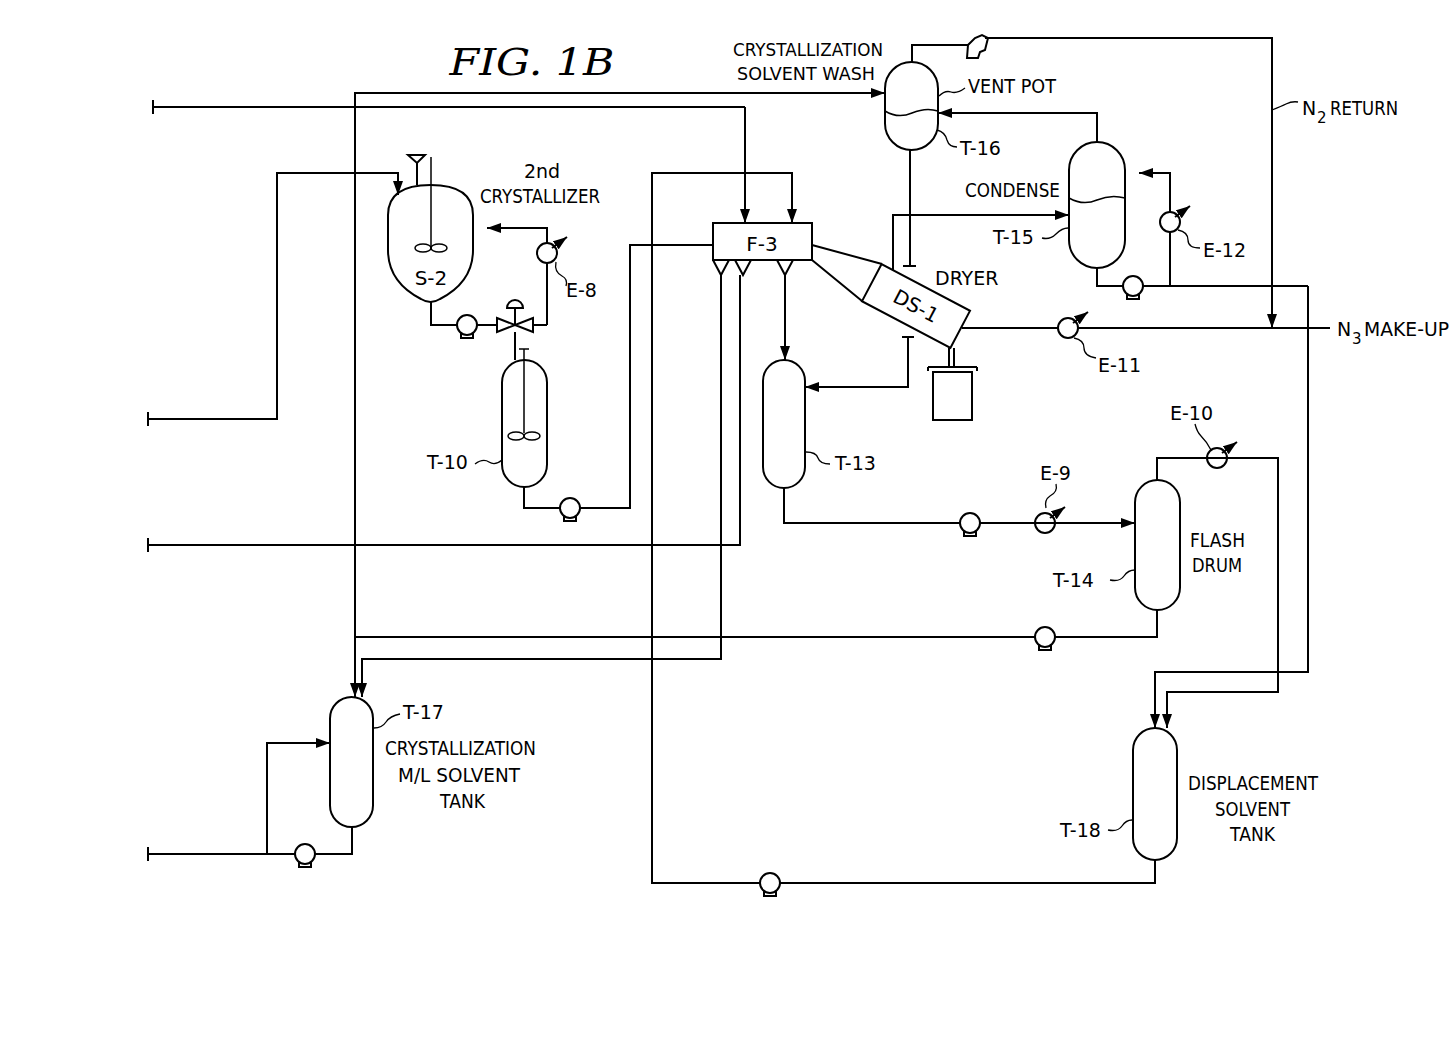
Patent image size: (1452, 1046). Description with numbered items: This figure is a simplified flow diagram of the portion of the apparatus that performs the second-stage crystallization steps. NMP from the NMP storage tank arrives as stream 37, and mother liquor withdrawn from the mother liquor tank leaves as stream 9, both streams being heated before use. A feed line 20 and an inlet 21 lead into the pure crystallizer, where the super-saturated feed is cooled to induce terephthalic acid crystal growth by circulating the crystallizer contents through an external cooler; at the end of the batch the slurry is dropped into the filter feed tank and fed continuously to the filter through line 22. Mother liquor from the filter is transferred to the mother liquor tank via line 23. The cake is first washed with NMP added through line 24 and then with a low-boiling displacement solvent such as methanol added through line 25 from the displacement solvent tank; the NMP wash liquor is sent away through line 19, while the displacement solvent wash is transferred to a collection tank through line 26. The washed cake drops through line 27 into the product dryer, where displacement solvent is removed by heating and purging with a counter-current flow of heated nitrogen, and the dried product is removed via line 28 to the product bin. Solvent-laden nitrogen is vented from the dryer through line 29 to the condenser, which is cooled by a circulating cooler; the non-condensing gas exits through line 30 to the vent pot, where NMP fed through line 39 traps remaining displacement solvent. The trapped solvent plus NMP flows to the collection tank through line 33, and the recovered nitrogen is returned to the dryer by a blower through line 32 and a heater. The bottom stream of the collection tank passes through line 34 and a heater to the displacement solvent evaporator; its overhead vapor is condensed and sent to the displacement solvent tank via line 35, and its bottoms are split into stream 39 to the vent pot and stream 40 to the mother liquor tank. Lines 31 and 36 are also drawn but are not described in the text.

The mother liquor stream 9 is at (234, 855).
The NMP wash liquor line 19 is at (290, 546).
The feed line to second crystallizer 20 is at (252, 419).
The second crystallizer inlet funnel 21 is at (411, 158).
The slurry feed line 22 is at (430, 320).
The mother liquor line 23 is at (720, 360).
The NMP wash line 24 is at (744, 191).
The displacement solvent line 25 is at (768, 173).
The displacement solvent transfer line 26 is at (786, 336).
The washed cake line 27 is at (832, 267).
The dried product line 28 is at (973, 396).
The dryer vent line 29 is at (893, 215).
The non-condensing gas line 30 is at (1098, 130).
The condensate return line to displacement solvent tank 31 is at (1309, 585).
The nitrogen return line 32 is at (1273, 238).
The trapped solvent transfer line 33 is at (877, 390).
The tank bottom stream line 34 is at (786, 497).
The condensed displacement solvent line 35 is at (1236, 693).
The flash drum bottoms line 36 is at (858, 640).
The NMP feed stream 37 is at (232, 107).
The NMP vent pot feed stream 39 is at (355, 476).
The evaporator bottoms return stream 40 is at (353, 654).